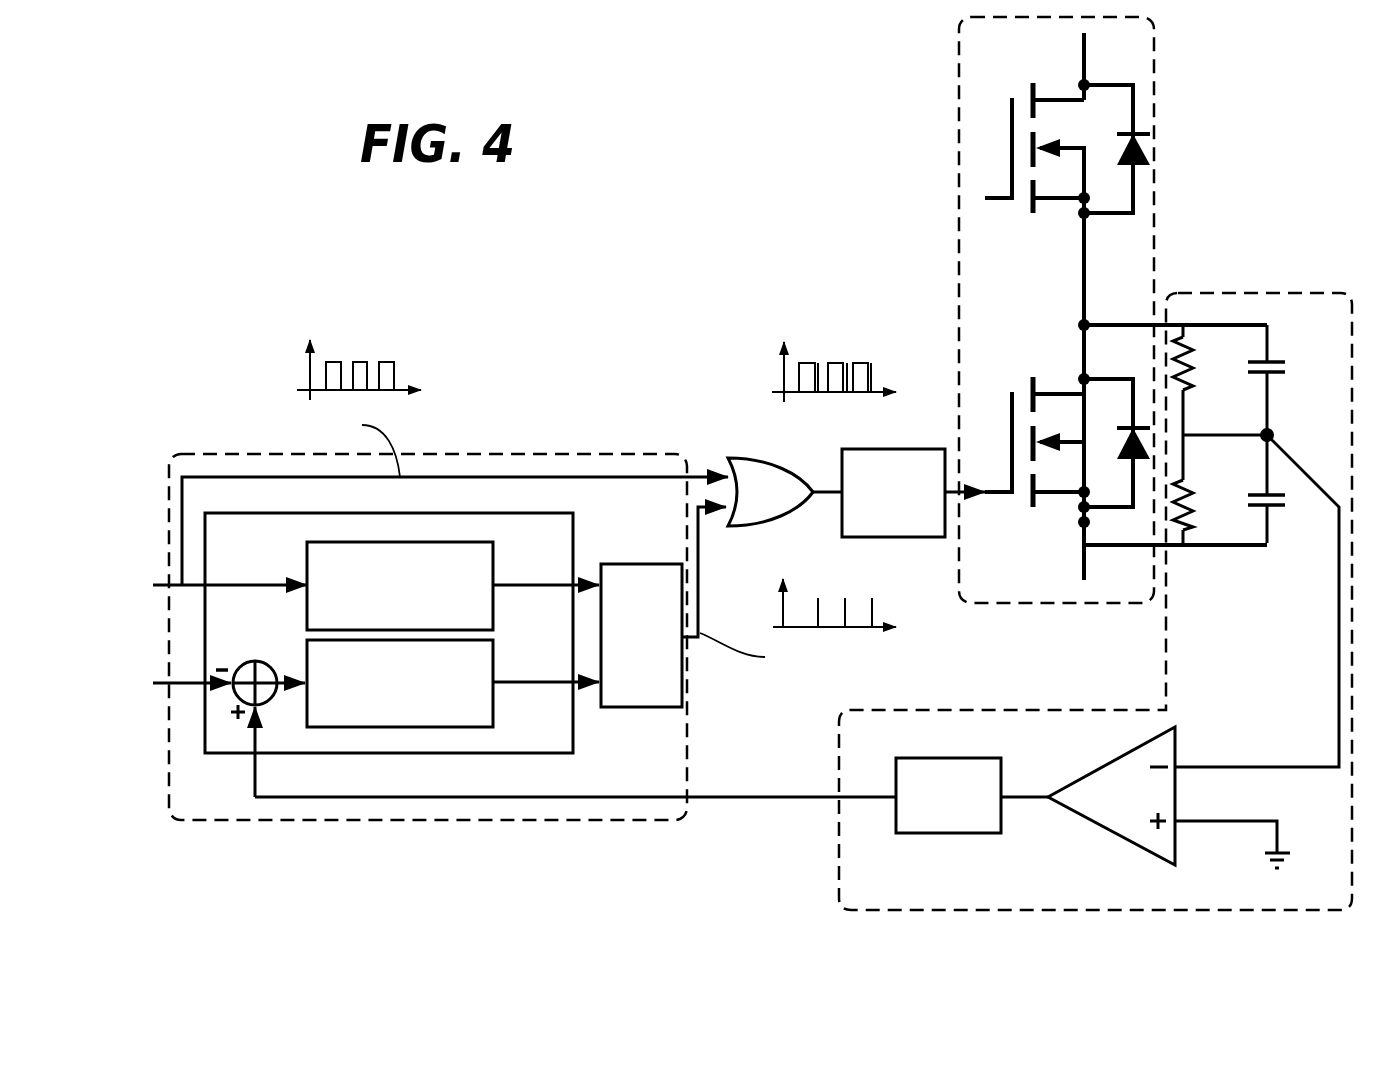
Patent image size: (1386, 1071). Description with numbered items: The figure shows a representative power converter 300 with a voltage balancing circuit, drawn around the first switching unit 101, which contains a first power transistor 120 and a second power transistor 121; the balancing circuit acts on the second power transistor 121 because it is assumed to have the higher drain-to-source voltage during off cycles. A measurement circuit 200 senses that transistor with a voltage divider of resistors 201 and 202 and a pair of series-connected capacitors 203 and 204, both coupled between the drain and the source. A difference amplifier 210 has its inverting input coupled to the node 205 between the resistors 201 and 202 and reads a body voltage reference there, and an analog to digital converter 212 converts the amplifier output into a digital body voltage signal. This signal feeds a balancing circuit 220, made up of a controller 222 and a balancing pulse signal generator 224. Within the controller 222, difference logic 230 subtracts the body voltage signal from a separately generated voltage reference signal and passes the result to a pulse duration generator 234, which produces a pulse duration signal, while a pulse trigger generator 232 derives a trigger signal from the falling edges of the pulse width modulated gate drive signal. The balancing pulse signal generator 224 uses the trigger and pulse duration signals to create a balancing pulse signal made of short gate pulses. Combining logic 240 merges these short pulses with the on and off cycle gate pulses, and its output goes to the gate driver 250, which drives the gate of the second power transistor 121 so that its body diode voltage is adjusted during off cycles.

The first switching unit 101 is at (958, 80).
The first power transistor 120 is at (1033, 205).
The second power transistor 121 is at (1033, 385).
The measurement circuit 200 is at (839, 899).
The resistor 201 is at (1193, 362).
The resistor 202 is at (1193, 500).
The capacitor 203 is at (1283, 373).
The capacitor 204 is at (1283, 506).
The node 205 is at (1266, 440).
The difference amplifier 210 is at (1122, 828).
The analog to digital converter 212 is at (948, 795).
The balancing circuit 220 is at (688, 821).
The controller 222 is at (573, 740).
The balancing pulse signal generator 224 is at (641, 635).
The difference logic 230 is at (255, 660).
The pulse trigger generator 232 is at (400, 586).
The pulse duration generator 234 is at (400, 683).
The combining logic 240 is at (762, 517).
The gate driver 250 is at (893, 493).
The power converter 300 is at (540, 272).